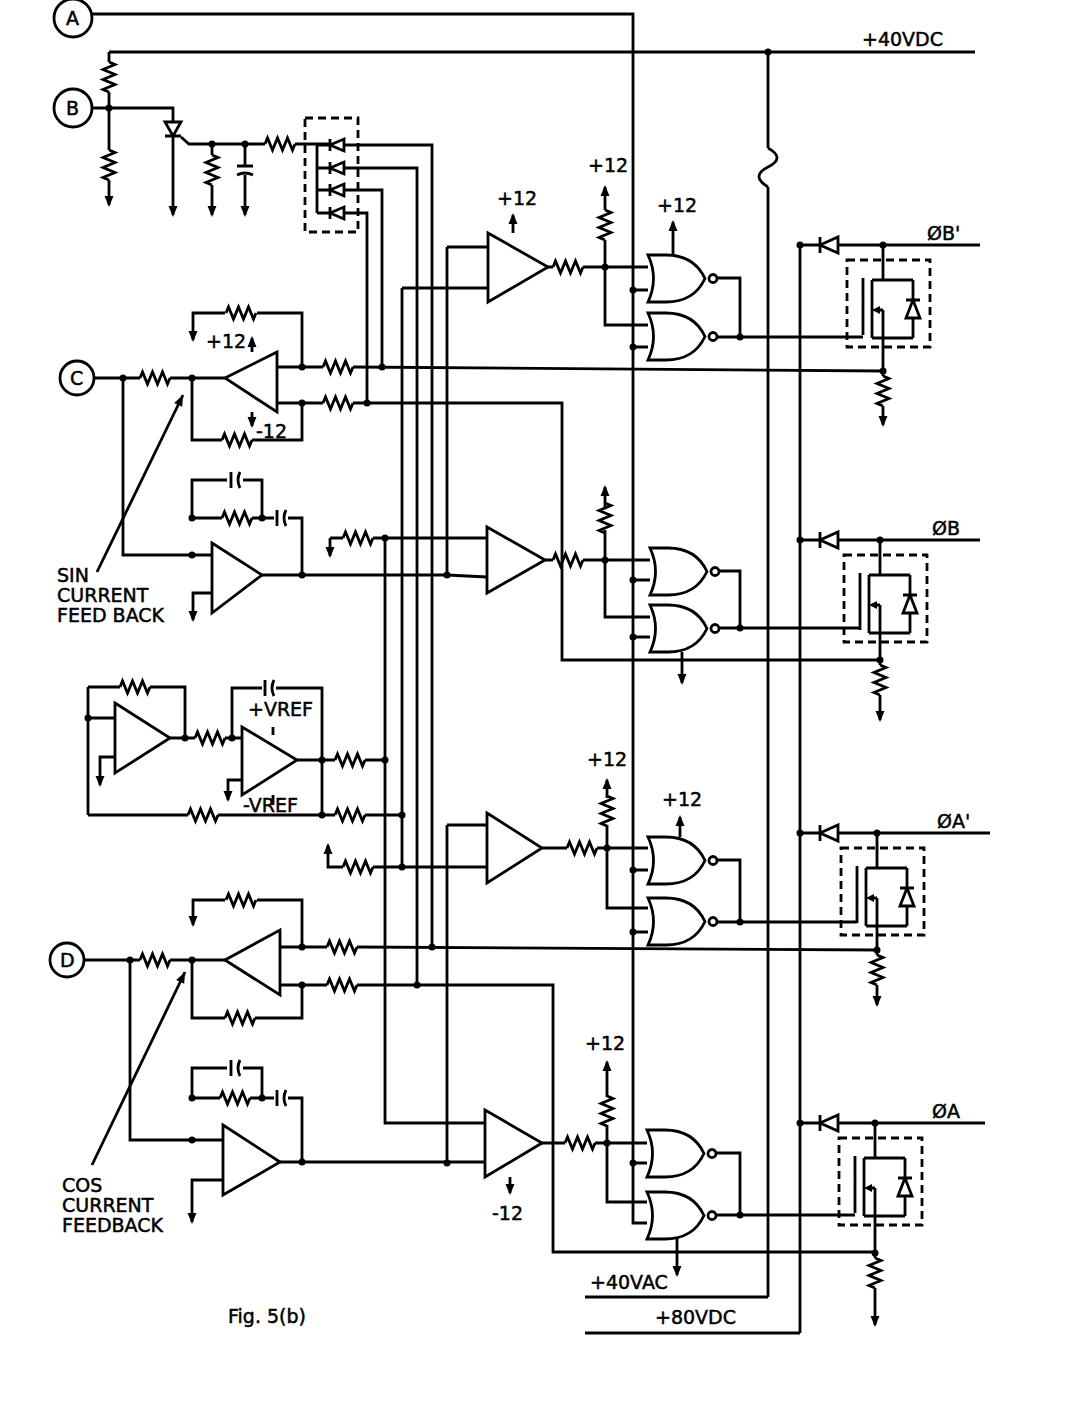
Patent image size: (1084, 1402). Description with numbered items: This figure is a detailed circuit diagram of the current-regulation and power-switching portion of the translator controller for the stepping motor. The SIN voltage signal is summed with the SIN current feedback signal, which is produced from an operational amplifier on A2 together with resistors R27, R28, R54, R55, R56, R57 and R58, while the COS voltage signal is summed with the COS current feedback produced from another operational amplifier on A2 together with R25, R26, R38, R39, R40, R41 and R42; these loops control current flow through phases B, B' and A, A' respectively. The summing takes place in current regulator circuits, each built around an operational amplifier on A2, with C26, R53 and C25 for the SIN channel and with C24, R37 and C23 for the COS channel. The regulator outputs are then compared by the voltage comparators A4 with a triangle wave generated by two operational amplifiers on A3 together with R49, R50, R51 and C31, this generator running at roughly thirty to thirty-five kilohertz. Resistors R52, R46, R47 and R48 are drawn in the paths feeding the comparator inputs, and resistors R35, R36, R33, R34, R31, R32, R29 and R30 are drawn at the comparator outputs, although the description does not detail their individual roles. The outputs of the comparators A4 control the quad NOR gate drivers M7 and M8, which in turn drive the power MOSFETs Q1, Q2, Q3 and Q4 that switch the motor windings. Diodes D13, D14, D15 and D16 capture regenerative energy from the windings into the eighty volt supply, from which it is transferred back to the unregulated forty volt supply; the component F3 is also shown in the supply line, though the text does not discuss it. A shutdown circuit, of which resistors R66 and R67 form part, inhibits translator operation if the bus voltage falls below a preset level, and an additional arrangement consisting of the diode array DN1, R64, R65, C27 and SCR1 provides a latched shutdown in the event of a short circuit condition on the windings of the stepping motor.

The resistor R67 is at (129, 77).
The resistor R66 is at (129, 165).
The SCR SCR1 is at (197, 156).
The resistor R65 is at (199, 180).
The capacitor C27 is at (264, 180).
The resistor R64 is at (276, 132).
The diode array DN1 is at (331, 163).
The fuse F3 is at (782, 167).
The voltage comparator A4 is at (516, 705).
The resistor R35 is at (598, 276).
The resistor R36 is at (583, 226).
The driver M7 is at (683, 453).
The power MOSFET Q1 is at (888, 296).
The diode D16 is at (890, 234).
The resistor R28 is at (903, 401).
The resistor R58 is at (154, 366).
The operational amplifier A2 is at (246, 772).
The resistor R57 is at (246, 324).
The resistor R56 is at (247, 412).
The resistor R55 is at (580, 355).
The resistor R54 is at (578, 517).
The capacitor C26 is at (236, 487).
The resistor R53 is at (233, 526).
The capacitor C25 is at (302, 534).
The resistor R52 is at (407, 532).
The resistor R33 is at (597, 569).
The resistor R34 is at (617, 522).
The power MOSFET Q2 is at (885, 591).
The diode D15 is at (890, 529).
The resistor R27 is at (901, 693).
The operational amplifier A3 is at (206, 749).
The resistor R51 is at (136, 698).
The resistor R50 is at (208, 726).
The capacitor C31 is at (277, 707).
The resistor R48 is at (341, 748).
The resistor R47 is at (362, 803).
The resistor R49 is at (205, 824).
The resistor R46 is at (406, 865).
The resistor R31 is at (595, 857).
The resistor R32 is at (584, 813).
The driver M8 is at (682, 1038).
The power MOSFET Q3 is at (882, 884).
The diode D14 is at (895, 822).
The resistor R26 is at (898, 981).
The resistor R42 is at (154, 948).
The resistor R41 is at (246, 909).
The resistor R40 is at (247, 992).
The resistor R39 is at (578, 936).
The resistor R38 is at (577, 1105).
The capacitor C24 is at (235, 1070).
The resistor R37 is at (233, 1106).
The capacitor C23 is at (302, 1119).
The resistor R29 is at (594, 1152).
The resistor R30 is at (584, 1101).
The power MOSFET Q4 is at (880, 1174).
The diode D13 is at (892, 1112).
The resistor R25 is at (896, 1292).